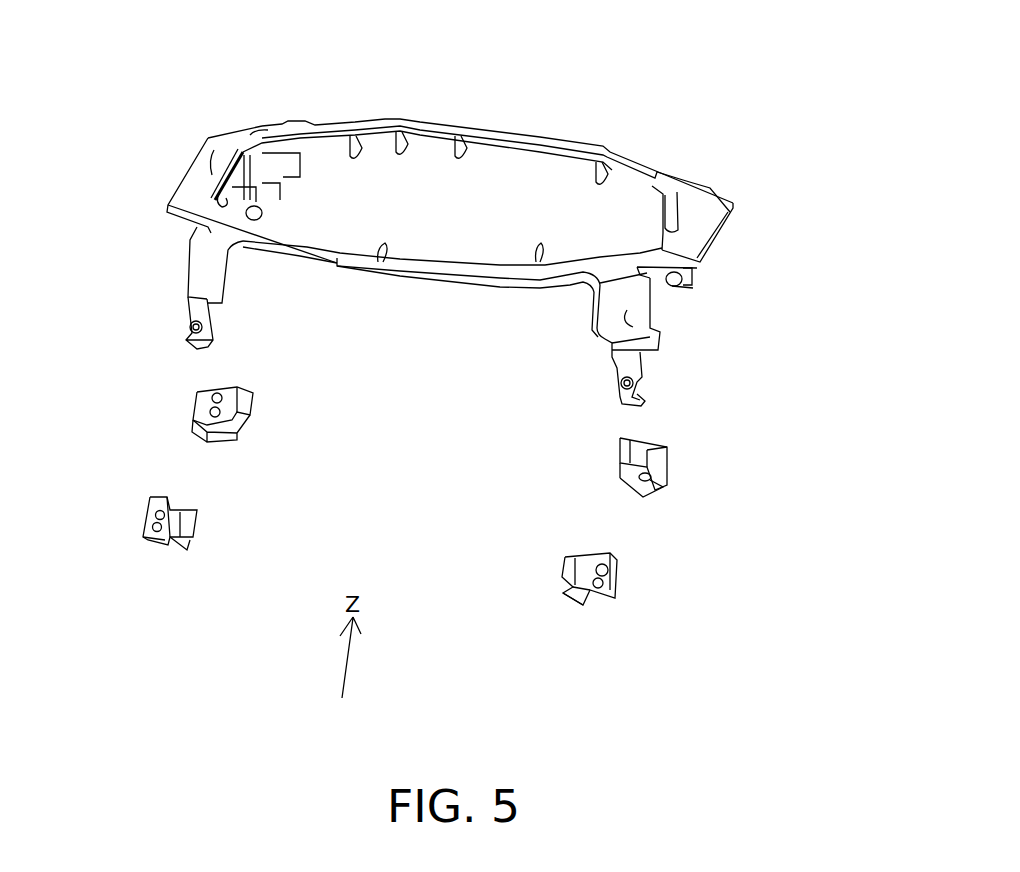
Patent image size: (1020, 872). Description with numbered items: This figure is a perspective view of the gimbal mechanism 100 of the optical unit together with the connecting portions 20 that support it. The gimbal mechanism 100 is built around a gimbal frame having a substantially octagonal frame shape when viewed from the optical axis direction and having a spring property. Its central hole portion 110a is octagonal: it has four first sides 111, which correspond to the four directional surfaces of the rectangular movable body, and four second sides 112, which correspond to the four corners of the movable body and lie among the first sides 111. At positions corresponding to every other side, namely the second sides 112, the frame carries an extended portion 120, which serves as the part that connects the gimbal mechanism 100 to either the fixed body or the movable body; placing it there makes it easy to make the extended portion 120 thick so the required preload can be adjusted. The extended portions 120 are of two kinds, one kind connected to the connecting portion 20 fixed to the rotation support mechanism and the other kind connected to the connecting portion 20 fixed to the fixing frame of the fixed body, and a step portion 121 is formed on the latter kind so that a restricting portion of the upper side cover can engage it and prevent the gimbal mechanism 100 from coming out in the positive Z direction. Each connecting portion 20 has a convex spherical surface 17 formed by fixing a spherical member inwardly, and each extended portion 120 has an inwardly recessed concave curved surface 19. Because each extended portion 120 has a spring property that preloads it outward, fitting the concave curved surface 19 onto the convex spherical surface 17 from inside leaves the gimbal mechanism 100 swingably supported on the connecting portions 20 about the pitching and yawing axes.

The gimbal mechanism 100 is at (712, 112).
The hole portion 110a is at (394, 128).
The first sides 111 is at (230, 200).
The second sides 112 is at (293, 232).
The extended portion 120 is at (283, 122).
The step portion 121 is at (214, 150).
The concave curved surface 19 is at (187, 327).
The convex spherical surface 17 is at (230, 415).
The connecting portion 20 is at (200, 397).